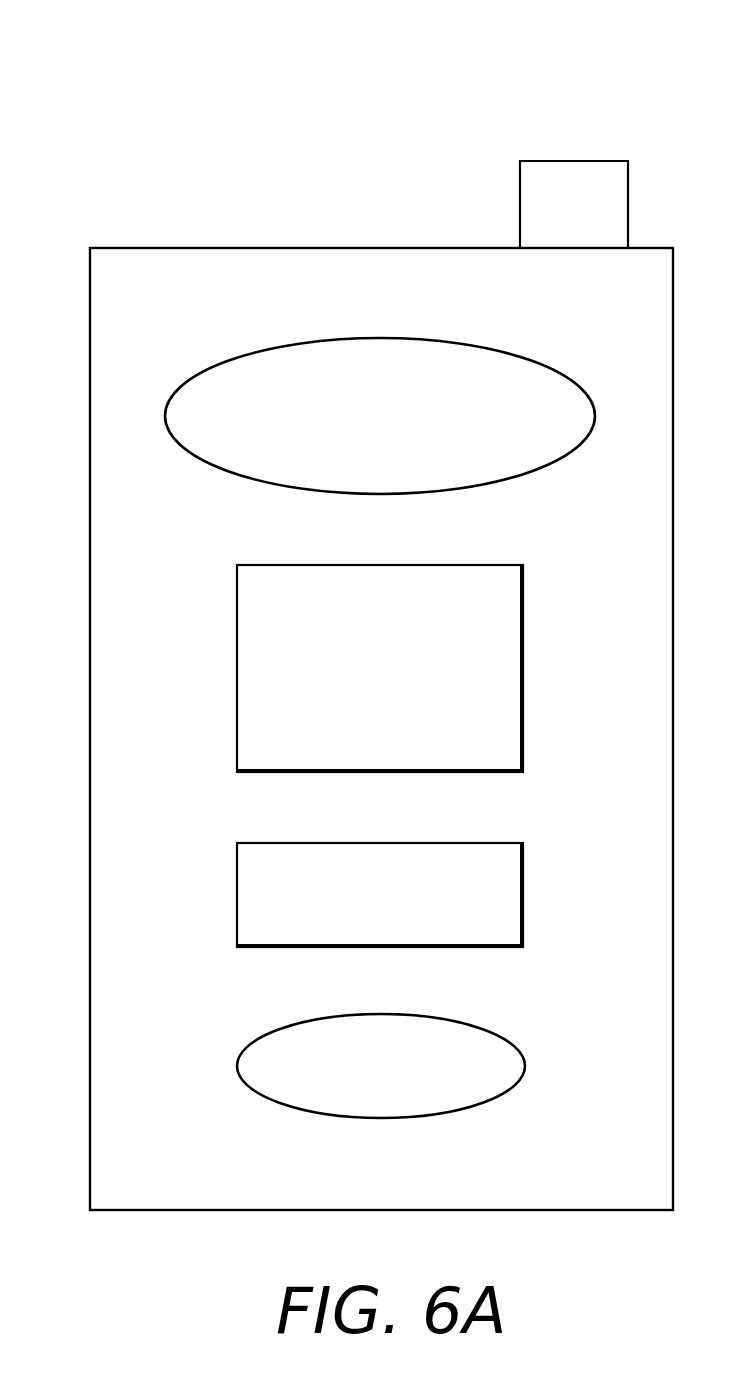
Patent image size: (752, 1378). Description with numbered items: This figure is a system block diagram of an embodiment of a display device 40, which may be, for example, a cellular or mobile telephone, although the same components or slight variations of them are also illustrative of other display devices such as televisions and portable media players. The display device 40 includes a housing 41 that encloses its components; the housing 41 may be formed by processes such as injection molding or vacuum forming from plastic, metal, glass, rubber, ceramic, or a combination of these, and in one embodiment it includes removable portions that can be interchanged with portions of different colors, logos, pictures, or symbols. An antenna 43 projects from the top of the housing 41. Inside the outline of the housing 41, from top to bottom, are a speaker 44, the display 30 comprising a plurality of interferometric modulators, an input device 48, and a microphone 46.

The display device 40 is at (168, 110).
The housing 41 is at (188, 247).
The antenna 43 is at (575, 160).
The speaker 44 is at (383, 337).
The display 30 is at (420, 565).
The input device 48 is at (420, 843).
The microphone 46 is at (380, 1015).